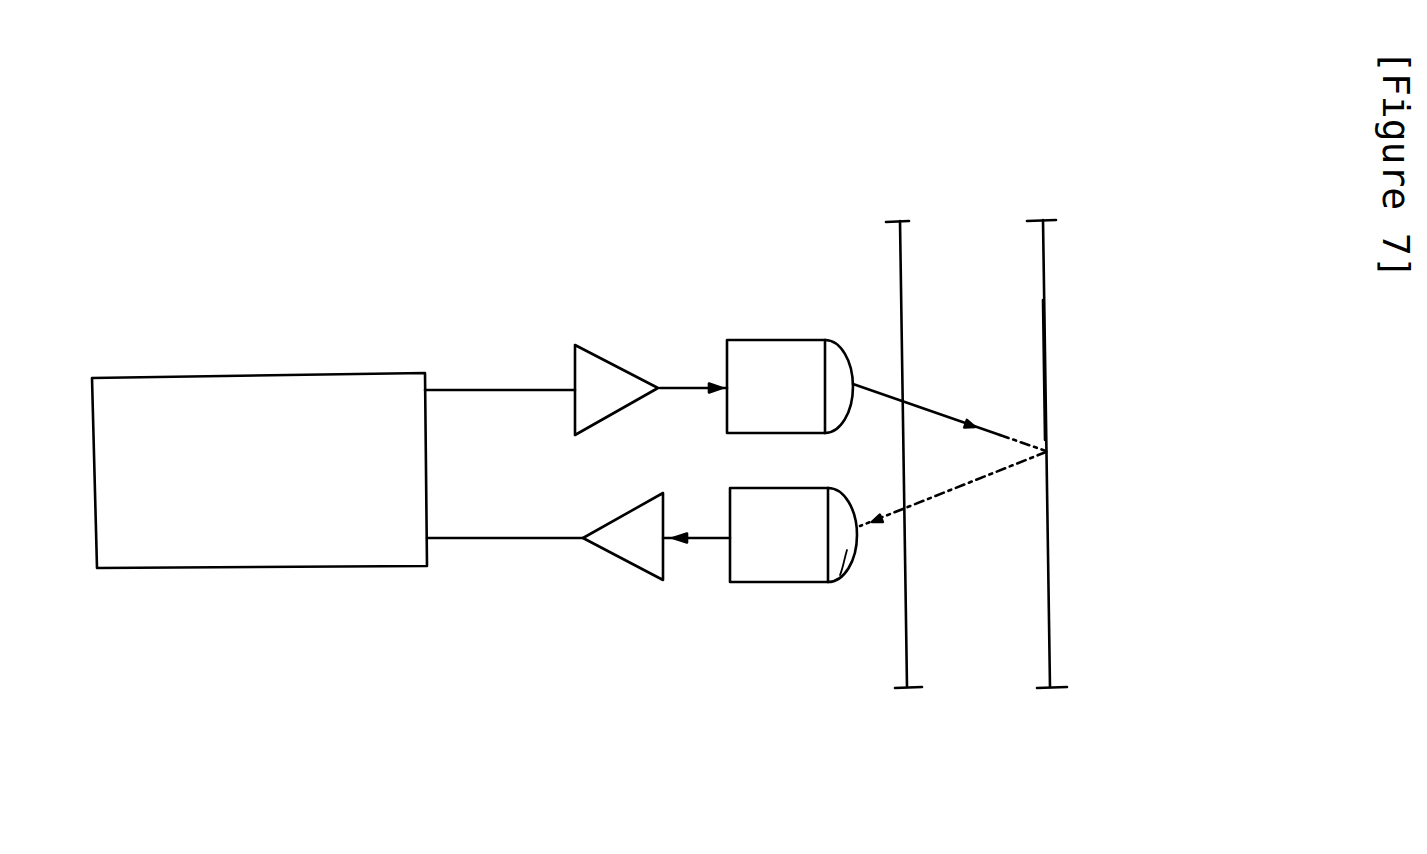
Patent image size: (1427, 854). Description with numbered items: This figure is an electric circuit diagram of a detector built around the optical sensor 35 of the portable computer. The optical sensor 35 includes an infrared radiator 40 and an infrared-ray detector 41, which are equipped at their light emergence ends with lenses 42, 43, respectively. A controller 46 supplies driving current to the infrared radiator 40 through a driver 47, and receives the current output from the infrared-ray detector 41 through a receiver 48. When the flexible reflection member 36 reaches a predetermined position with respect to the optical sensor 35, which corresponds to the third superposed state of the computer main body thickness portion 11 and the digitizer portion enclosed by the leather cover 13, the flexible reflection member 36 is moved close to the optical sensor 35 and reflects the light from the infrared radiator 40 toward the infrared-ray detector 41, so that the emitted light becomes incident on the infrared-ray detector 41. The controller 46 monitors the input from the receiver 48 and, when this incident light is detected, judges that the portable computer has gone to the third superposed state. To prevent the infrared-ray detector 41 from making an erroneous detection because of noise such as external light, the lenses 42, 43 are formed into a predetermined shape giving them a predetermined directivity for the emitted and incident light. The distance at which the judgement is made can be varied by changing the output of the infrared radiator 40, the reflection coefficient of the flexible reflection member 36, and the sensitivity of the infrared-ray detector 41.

The computer main body thickness portion 11 is at (907, 627).
The leather cover 13 is at (1008, 488).
The optical sensor 35 is at (751, 420).
The flexible reflection member 36 is at (1043, 336).
The infrared radiator 40 is at (740, 340).
The infrared-ray detector 41 is at (765, 584).
The lens 42 is at (843, 346).
The lens 43 is at (850, 583).
The controller 46 is at (270, 377).
The driver 47 is at (600, 357).
The receiver 48 is at (617, 555).